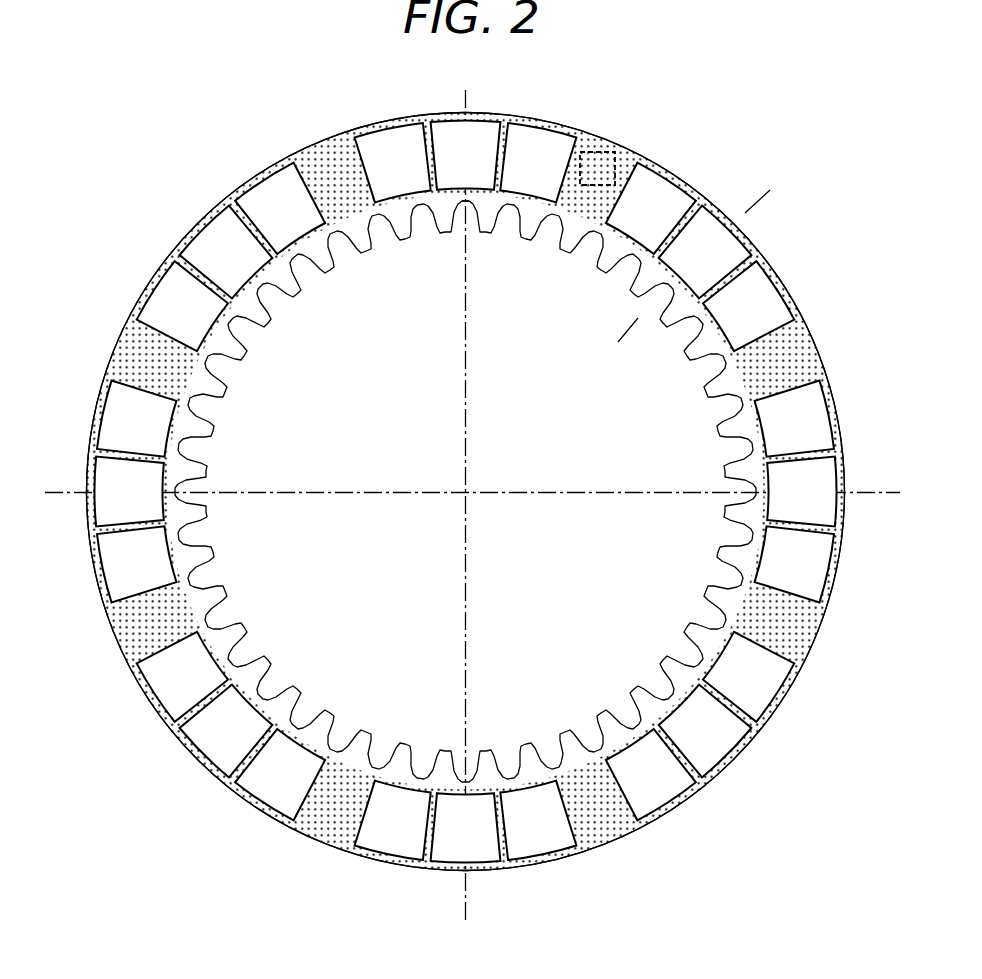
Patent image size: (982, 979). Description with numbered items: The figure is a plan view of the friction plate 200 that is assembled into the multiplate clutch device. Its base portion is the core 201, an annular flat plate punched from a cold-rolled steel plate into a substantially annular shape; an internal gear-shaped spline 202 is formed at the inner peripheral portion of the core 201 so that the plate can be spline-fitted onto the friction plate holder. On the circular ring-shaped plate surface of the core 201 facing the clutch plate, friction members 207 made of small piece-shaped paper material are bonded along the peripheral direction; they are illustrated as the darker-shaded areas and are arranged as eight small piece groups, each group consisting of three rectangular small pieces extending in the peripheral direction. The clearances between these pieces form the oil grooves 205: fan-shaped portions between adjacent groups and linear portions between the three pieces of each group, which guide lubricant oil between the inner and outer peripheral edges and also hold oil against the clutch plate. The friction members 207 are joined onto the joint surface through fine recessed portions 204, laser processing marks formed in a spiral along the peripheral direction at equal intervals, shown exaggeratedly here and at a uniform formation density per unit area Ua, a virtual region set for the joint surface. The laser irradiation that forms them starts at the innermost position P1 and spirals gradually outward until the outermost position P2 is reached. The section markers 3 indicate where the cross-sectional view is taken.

The friction plate 200 is at (158, 197).
The core 201 is at (817, 350).
The internal gear-shaped spline 202 is at (187, 400).
The fine recessed portion 204 is at (128, 353).
The oil groove 205 is at (498, 132).
The friction member 207 is at (533, 127).
The unit area Ua is at (603, 153).
The section line of FIG. 3 is at (770, 190).
The position P1 is at (468, 198).
The position P2 is at (465, 870).